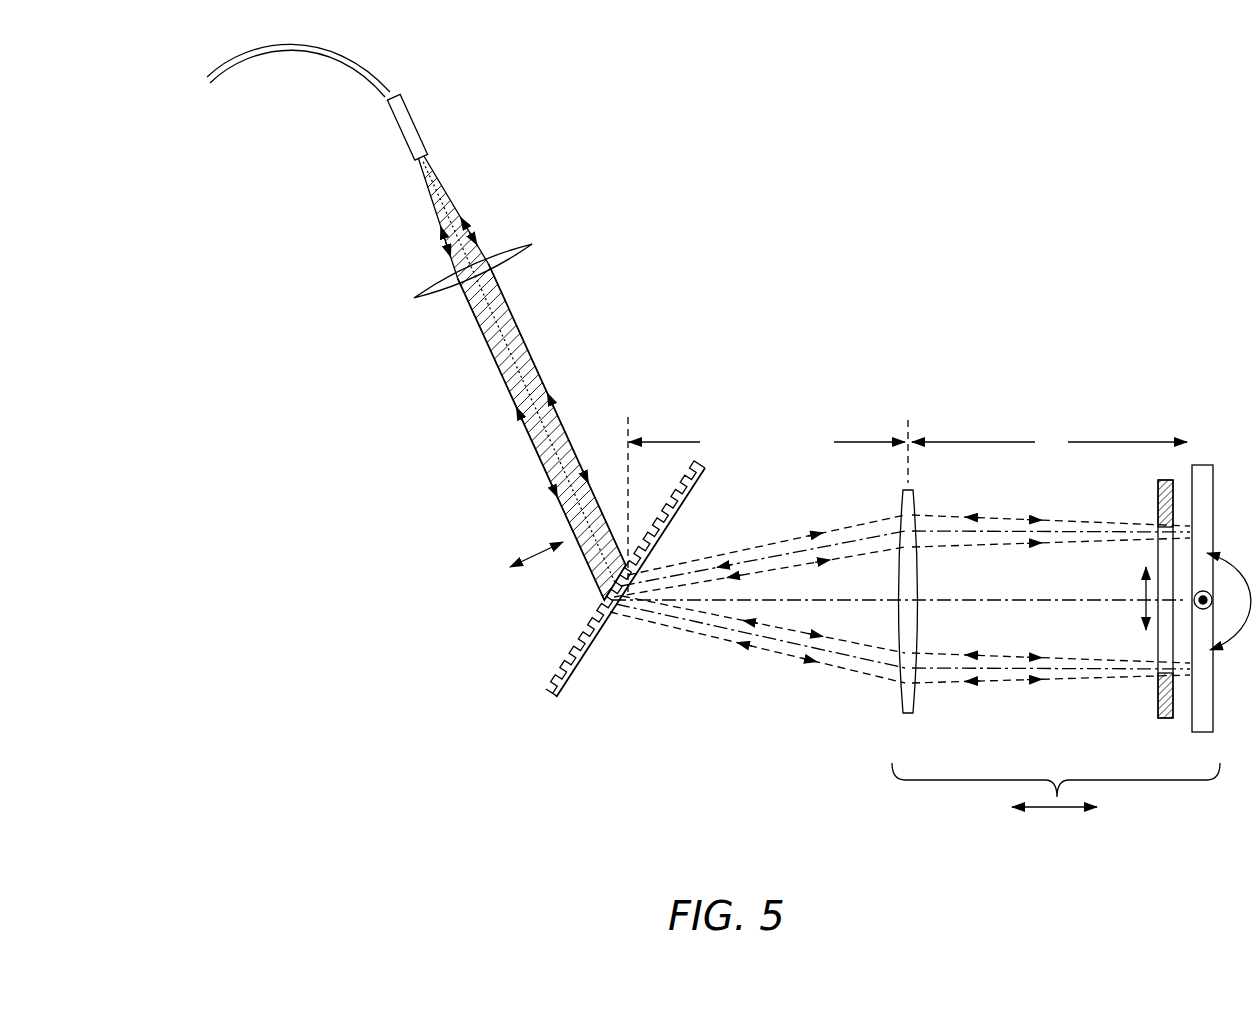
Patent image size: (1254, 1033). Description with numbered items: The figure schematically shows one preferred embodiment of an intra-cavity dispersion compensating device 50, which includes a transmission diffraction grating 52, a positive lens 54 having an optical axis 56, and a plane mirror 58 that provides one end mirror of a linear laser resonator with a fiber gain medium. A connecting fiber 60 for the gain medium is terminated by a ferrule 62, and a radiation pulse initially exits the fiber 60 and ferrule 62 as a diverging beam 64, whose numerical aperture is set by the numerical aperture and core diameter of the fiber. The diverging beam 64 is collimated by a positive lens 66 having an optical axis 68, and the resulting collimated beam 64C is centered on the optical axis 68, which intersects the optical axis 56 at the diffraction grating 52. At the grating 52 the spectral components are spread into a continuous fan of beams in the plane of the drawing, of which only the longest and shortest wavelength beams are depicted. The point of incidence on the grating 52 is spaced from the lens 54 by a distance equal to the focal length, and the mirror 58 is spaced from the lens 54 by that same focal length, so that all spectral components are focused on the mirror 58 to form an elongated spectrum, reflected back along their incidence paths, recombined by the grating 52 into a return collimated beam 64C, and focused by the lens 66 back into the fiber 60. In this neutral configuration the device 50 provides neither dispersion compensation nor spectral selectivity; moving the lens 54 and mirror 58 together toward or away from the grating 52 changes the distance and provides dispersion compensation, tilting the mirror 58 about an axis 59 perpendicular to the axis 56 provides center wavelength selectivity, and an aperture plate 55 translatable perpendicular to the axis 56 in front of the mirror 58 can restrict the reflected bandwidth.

The intra-cavity dispersion compensating device 50 is at (545, 787).
The transmission diffraction grating 52 is at (581, 612).
The positive lens 54 is at (923, 707).
The aperture plate 55 is at (1152, 498).
The optical axis 56 is at (1072, 600).
The plane mirror 58 is at (1184, 723).
The axis 59 is at (1202, 590).
The connecting fiber 60 is at (352, 62).
The ferrule 62 is at (417, 130).
The diverging beam 64 is at (452, 190).
The collimated beam 64C is at (565, 406).
The positive lens 66 is at (524, 274).
The optical axis 68 is at (503, 350).